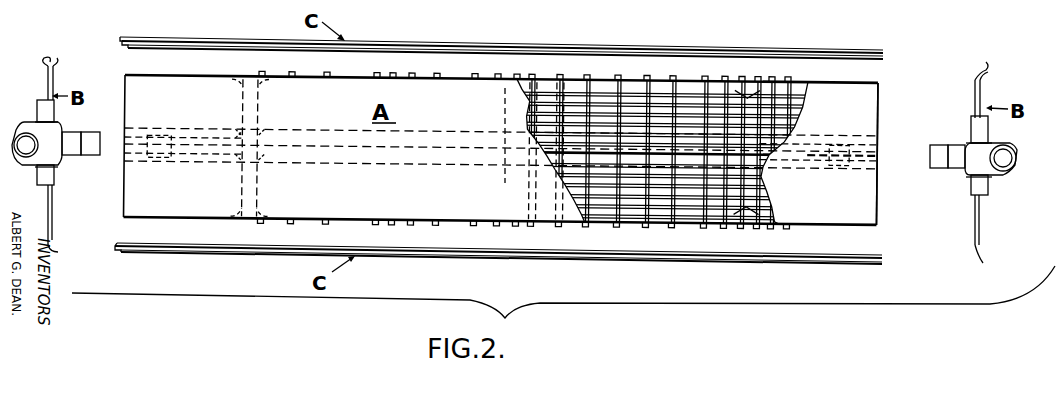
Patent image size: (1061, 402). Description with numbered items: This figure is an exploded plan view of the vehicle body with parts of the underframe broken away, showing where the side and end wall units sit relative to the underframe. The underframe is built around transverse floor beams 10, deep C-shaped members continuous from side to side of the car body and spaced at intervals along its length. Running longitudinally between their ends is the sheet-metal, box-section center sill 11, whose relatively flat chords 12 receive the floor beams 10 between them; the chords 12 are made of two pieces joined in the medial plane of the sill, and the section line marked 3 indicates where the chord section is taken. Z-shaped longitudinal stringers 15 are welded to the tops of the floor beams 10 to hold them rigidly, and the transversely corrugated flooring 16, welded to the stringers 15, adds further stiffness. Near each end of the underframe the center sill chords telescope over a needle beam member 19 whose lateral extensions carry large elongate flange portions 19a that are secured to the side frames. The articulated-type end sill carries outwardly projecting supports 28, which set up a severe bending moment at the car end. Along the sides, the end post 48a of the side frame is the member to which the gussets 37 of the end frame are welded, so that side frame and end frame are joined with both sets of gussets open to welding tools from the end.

The section line 3- 3 is at (500, 100).
The transverse floor beams 10 is at (688, 84).
The center sill 11 is at (343, 146).
The chords 12 is at (545, 154).
The longitudinal stringers 15 is at (787, 110).
The transversely corrugated flooring 16 is at (866, 109).
The needle beam member 19 is at (259, 102).
The flange portions 19a is at (234, 81).
The outwardly projecting supports 28 is at (30, 158).
The gussets 37 is at (985, 270).
The end post 48a is at (124, 40).